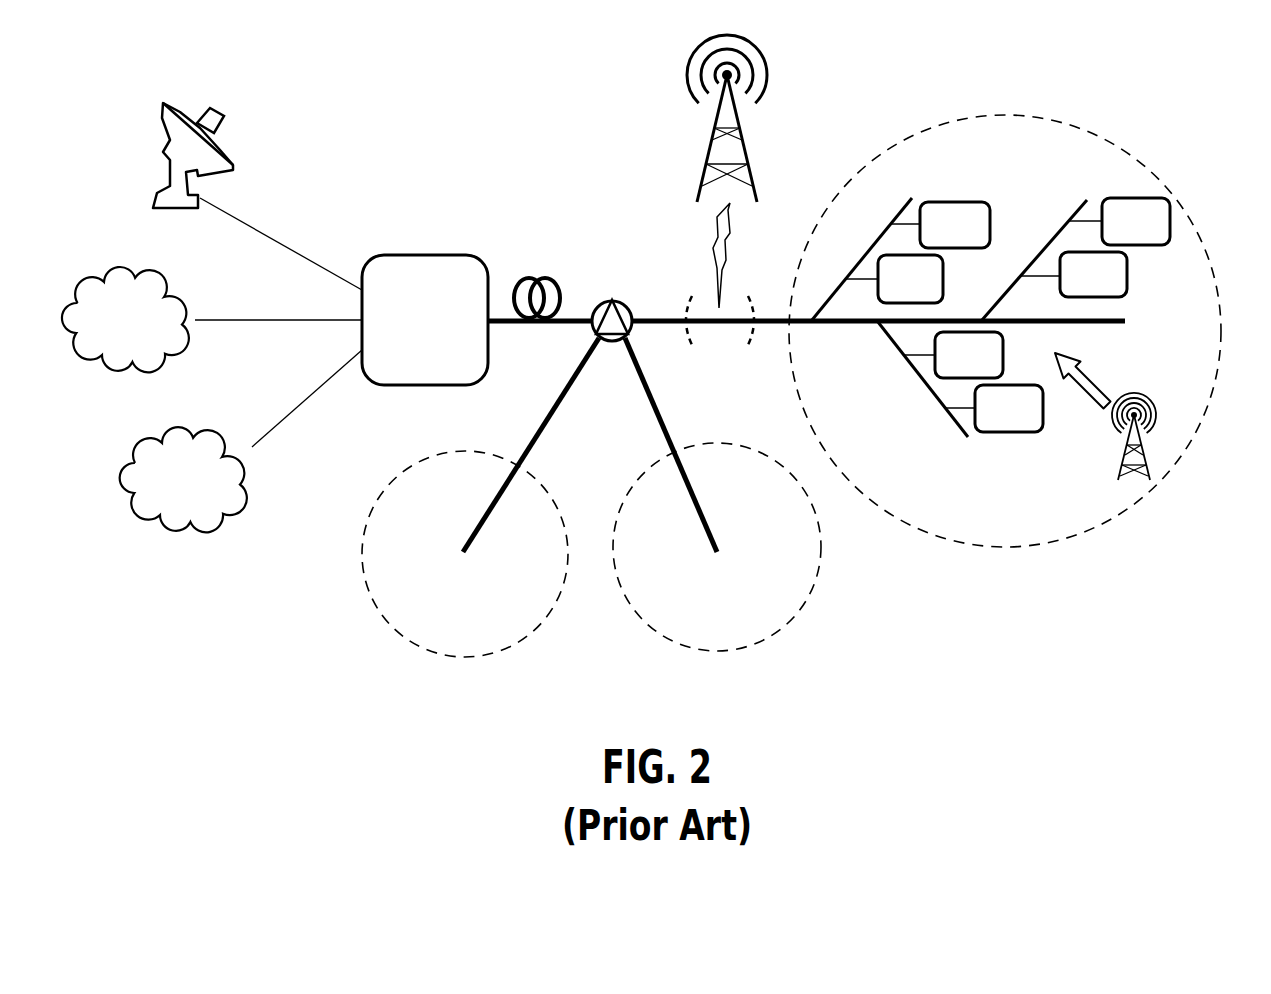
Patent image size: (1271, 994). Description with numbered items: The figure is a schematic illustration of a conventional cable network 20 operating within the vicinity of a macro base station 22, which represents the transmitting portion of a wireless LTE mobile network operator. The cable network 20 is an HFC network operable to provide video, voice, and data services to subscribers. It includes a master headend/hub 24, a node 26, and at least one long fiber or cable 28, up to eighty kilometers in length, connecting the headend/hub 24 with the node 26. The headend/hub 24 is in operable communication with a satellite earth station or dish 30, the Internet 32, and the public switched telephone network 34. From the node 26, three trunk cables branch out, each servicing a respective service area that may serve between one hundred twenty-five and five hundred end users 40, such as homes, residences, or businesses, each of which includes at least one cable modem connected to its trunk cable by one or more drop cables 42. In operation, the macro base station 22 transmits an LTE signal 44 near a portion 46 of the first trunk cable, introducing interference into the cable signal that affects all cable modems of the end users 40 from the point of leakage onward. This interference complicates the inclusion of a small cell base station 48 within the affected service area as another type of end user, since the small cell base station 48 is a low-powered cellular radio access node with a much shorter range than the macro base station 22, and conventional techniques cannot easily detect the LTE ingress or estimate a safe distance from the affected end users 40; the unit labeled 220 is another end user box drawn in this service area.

The conventional cable network 20 is at (1072, 70).
The macro base station 22 is at (708, 148).
The master headend/hub 24 is at (425, 320).
The node 26 is at (605, 300).
The long fiber or cable 28 is at (525, 282).
The satellite earth station/dish 30 is at (238, 168).
The Internet 32 is at (125, 319).
The public switched telephone network (PSTN) 34 is at (183, 479).
The end users 40 is at (1008, 315).
The drop cables 42 is at (908, 204).
The LTE signal 44 is at (712, 276).
The portion of trunk cable 46 is at (720, 345).
The small cell base station 48 is at (1150, 475).
The remote unit 220 is at (1073, 274).